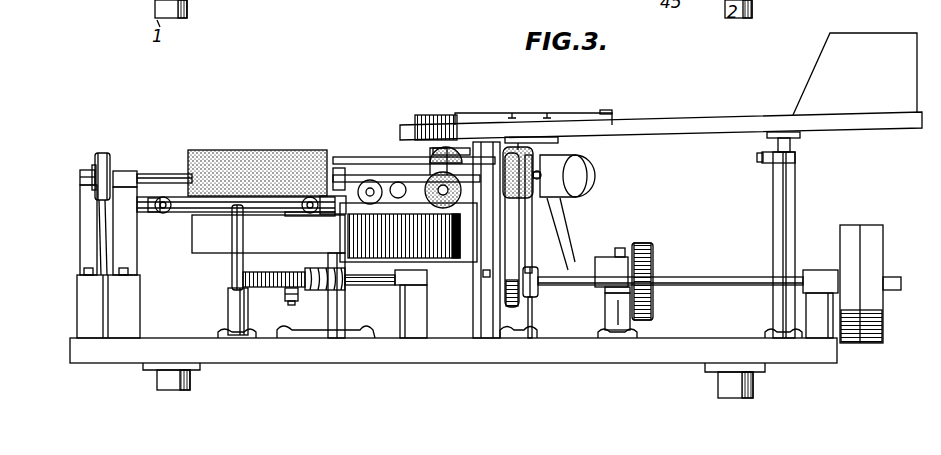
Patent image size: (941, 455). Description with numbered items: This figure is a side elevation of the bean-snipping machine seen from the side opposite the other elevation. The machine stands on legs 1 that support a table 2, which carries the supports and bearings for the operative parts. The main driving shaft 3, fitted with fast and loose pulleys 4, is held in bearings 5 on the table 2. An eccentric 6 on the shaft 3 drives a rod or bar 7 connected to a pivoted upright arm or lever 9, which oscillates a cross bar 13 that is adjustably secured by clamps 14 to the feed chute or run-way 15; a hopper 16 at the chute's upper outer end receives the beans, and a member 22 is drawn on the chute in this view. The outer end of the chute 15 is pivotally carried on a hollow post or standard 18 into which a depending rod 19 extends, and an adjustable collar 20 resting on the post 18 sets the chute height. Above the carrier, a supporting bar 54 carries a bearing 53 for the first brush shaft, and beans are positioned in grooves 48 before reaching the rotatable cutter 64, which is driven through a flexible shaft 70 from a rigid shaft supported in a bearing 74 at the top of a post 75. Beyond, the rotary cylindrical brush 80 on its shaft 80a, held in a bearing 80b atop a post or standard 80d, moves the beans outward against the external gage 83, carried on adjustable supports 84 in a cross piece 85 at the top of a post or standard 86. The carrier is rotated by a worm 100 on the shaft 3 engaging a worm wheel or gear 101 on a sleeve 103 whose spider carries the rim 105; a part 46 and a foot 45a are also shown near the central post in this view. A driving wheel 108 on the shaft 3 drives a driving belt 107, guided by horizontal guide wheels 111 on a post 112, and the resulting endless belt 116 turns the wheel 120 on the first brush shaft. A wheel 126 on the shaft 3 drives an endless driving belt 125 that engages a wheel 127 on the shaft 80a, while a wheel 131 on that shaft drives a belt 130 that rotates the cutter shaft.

The legs 1 is at (192, 378).
The table 2 is at (662, 357).
The main driving shaft 3 is at (720, 280).
The fast and loose pulleys 4 is at (883, 220).
The bearings 5 is at (420, 310).
The eccentric 6 is at (538, 296).
The rod or bar 7 is at (570, 268).
The pivoted upright arm or lever 9 is at (522, 318).
The cross bar 13 is at (527, 143).
The clamps 14 is at (558, 143).
The feed chute or run-way 15 is at (710, 125).
The hopper 16 is at (865, 37).
The hollow post or standard 18 is at (796, 187).
The depending rod 19 is at (800, 136).
The adjustable collar 20 is at (796, 156).
The rail 22 is at (605, 113).
The set nut 46 is at (291, 300).
The grooves 48 is at (410, 207).
The bearing 53 is at (430, 165).
The supporting bar 54 is at (346, 158).
The rotatable cutter 64 is at (352, 182).
The flexible shaft 70 is at (333, 157).
The bearing 74 is at (80, 172).
The post 75 is at (85, 209).
The rotary cylindrical brush 80 is at (212, 152).
The shaft 80a is at (170, 170).
The bearing 80b is at (137, 172).
The post or standard 80d is at (133, 242).
The external gage 83 is at (298, 216).
The adjustable supports 84 is at (307, 193).
The cross piece 85 is at (232, 272).
The post or standard 86 is at (230, 312).
The worm 100 is at (324, 286).
The worm wheel or gear 101 is at (272, 280).
The sleeve 103 is at (346, 268).
The rim 105 is at (455, 252).
The driving belt 107 is at (645, 243).
The driving wheel 108 is at (654, 262).
The horizontal guide wheels 111 is at (605, 268).
The post 112 is at (633, 247).
The endless belt 116 is at (605, 150).
The wheel 120 is at (578, 175).
The endless driving belt 125 is at (519, 233).
The wheel 126 is at (530, 262).
The wheel 127 is at (560, 206).
The belt 130 is at (105, 153).
The wheel 131 is at (97, 160).
The foot 45a is at (311, 340).